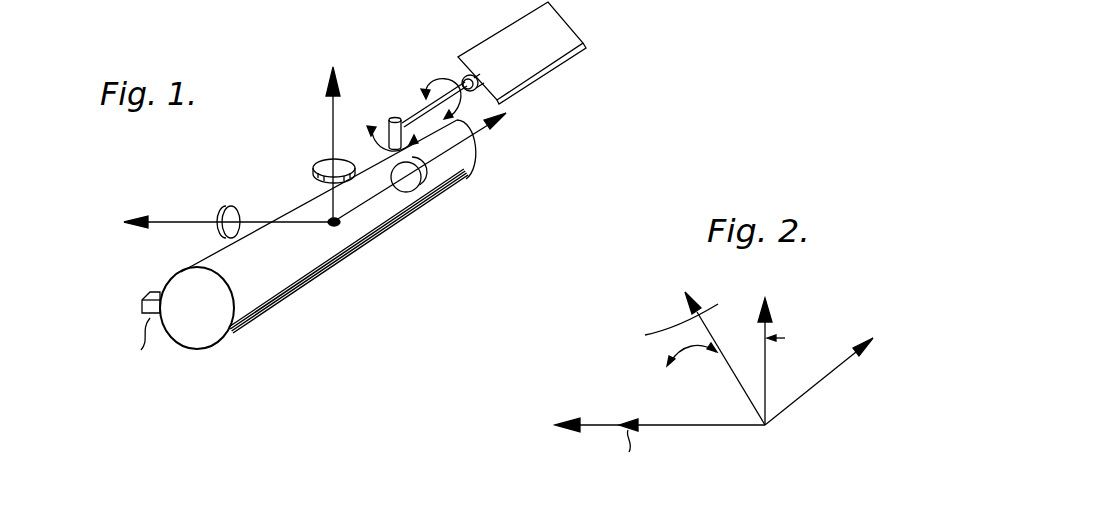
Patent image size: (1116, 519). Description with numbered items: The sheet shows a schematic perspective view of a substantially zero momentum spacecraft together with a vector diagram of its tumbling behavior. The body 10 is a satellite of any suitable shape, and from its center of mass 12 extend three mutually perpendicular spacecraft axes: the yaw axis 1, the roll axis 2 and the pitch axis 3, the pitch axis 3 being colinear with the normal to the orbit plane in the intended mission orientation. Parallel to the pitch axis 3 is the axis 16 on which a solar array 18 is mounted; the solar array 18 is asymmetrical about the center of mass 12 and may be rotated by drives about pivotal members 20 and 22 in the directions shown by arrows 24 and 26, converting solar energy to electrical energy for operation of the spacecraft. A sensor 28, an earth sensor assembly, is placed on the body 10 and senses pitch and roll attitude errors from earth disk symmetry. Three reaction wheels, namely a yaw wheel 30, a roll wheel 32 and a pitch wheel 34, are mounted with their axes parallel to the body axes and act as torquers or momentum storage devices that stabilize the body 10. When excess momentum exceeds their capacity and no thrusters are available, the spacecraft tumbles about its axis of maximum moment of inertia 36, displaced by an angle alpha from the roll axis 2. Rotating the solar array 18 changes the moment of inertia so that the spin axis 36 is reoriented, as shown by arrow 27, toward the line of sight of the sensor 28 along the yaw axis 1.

In FIG. 1, the yaw axis 1 is at (172, 218).
In FIG. 2, the yaw axis 1 is at (600, 420).
In FIG. 1, the roll axis 2 is at (331, 103).
In FIG. 2, the roll axis 2 is at (767, 370).
In FIG. 1, the pitch axis 3 is at (396, 208).
In FIG. 2, the pitch axis 3 is at (822, 380).
In FIG. 1, the body 10 is at (352, 283).
In FIG. 1, the center of mass 12 is at (347, 225).
In FIG. 1, the axis 16 is at (464, 98).
In FIG. 1, the solar array 18 is at (573, 30).
In FIG. 1, the pivotal member 20 is at (408, 115).
In FIG. 1, the pivotal member 22 is at (497, 87).
In FIG. 1, the arrow 24 is at (396, 149).
In FIG. 1, the arrow 26 is at (408, 85).
In FIG. 2, the arrow 27 is at (691, 370).
In FIG. 1, the sensor 28 is at (141, 307).
In FIG. 1, the yaw reaction wheel 30 is at (229, 206).
In FIG. 1, the roll reaction wheel 32 is at (320, 162).
In FIG. 1, the pitch reaction wheel 34 is at (450, 180).
In FIG. 2, the axis of maximum moment of inertia 36 is at (662, 347).